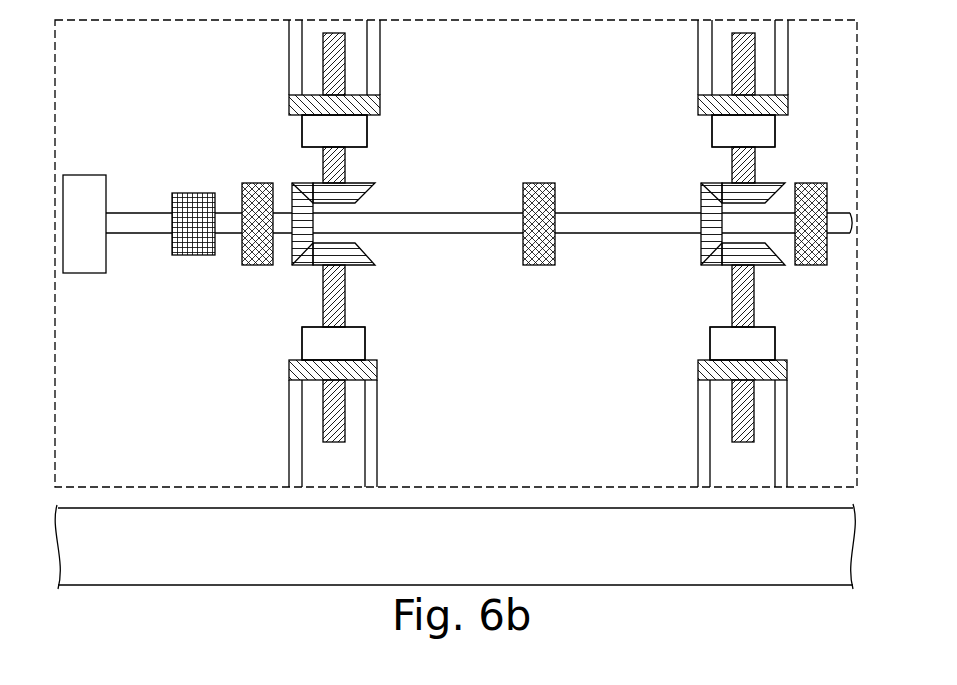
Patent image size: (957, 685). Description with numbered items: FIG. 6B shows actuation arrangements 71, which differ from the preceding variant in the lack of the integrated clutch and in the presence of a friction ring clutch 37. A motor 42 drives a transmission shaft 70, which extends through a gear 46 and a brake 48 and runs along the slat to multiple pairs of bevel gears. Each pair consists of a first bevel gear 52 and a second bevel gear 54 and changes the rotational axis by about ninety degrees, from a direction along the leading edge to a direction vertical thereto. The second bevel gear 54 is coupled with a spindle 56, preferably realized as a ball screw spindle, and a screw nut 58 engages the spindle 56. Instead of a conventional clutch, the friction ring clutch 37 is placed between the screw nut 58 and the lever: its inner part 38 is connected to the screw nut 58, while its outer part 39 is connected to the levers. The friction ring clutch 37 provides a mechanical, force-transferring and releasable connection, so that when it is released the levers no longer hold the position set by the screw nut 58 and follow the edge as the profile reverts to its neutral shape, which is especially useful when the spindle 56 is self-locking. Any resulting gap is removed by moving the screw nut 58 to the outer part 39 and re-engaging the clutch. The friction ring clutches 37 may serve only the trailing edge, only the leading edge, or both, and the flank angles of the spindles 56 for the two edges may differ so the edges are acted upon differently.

The friction ring clutch 37 is at (393, 370).
The inner part 38 is at (307, 100).
The outer part 39 is at (297, 108).
The motor 42 is at (83, 263).
The gear 46 is at (193, 193).
The brake 48 is at (252, 183).
The first bevel gear 52 is at (292, 258).
The second bevel gear 54 is at (375, 197).
The spindle 56 is at (338, 65).
The screw nut 58 is at (357, 133).
The transmission shaft 70 is at (493, 227).
The actuation arrangement 71 is at (455, 106).